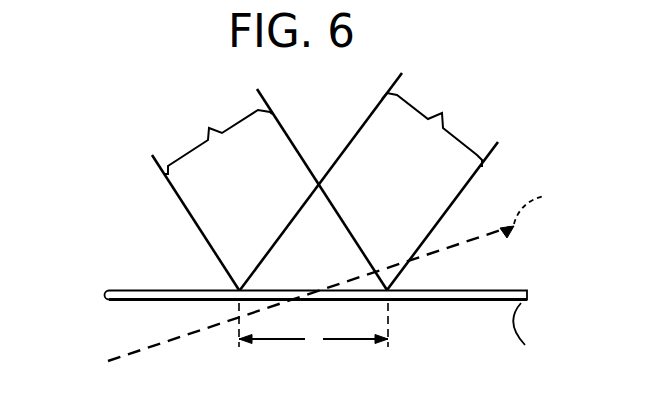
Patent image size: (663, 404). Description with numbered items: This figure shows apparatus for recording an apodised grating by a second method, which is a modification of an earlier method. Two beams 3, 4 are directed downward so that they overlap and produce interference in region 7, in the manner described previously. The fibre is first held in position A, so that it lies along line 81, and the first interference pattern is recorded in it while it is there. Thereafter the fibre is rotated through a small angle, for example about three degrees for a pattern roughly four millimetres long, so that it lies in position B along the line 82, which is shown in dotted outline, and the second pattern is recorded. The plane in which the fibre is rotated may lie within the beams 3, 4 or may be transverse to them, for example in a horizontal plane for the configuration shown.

The beam 3 is at (269, 189).
The beam 4 is at (369, 181).
The interference region 7 is at (313, 327).
The first fibre position 81 is at (533, 338).
The second fibre position line 82 is at (534, 209).
The first position A is at (302, 296).
The second position B is at (294, 303).